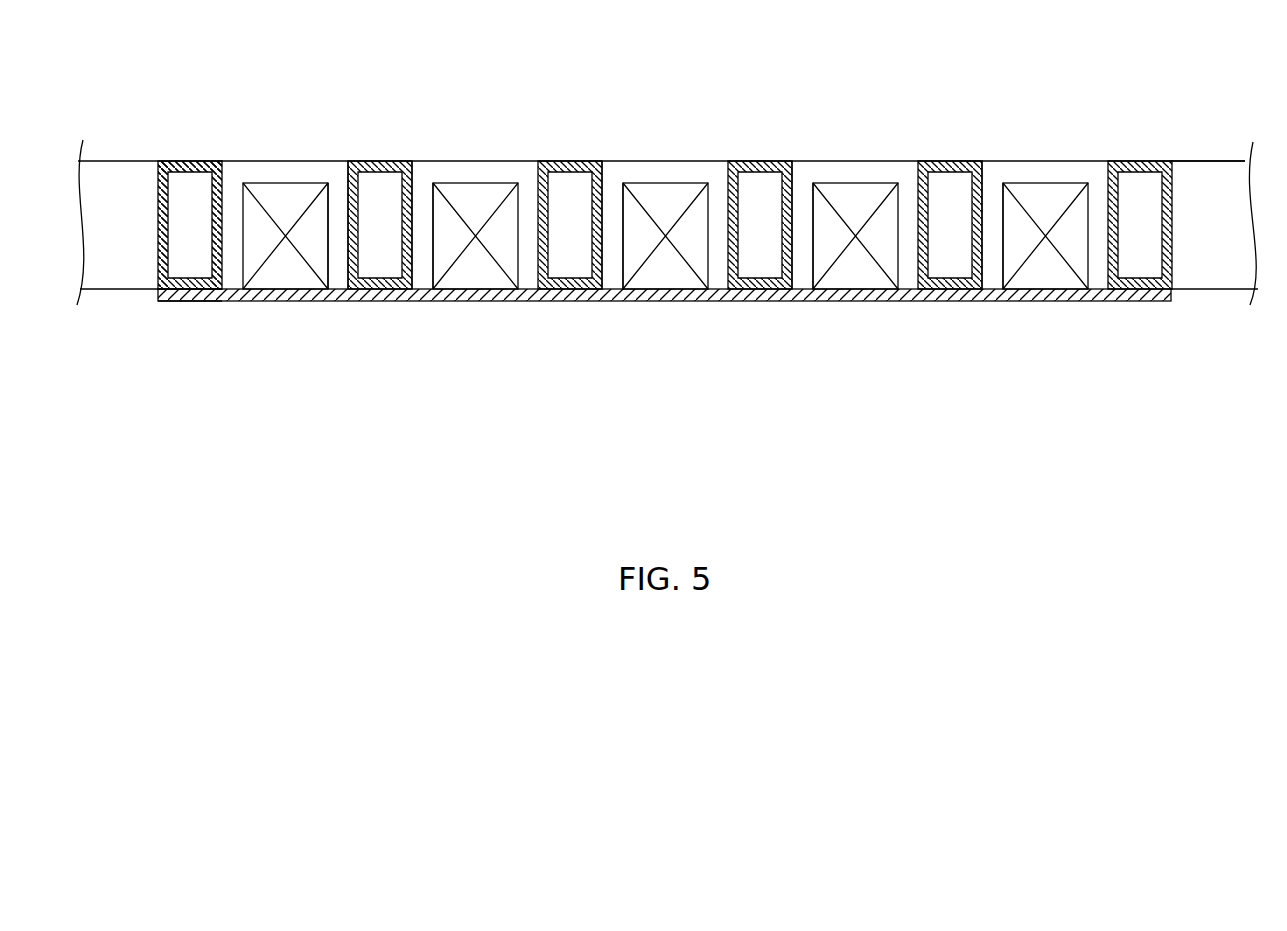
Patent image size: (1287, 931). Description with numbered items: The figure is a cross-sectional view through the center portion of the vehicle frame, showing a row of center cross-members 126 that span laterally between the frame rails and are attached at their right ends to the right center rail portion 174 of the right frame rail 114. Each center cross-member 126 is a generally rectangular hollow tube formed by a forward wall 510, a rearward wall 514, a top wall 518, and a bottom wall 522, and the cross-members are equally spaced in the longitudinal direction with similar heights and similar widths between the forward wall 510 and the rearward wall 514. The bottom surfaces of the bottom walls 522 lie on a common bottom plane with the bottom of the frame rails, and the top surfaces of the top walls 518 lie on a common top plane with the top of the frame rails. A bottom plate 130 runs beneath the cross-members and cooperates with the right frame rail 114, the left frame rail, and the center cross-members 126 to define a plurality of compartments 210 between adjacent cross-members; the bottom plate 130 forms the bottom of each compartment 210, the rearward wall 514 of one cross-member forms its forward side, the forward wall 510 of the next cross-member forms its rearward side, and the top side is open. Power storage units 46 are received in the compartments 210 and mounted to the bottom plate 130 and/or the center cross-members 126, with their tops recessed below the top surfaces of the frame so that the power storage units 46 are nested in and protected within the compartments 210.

The power storage unit 46 is at (287, 273).
The right frame rail 114 is at (1214, 172).
The center cross-member 126 is at (639, 221).
The bottom plate 130 is at (550, 302).
The right center rail portion 174 is at (443, 162).
The compartment 210 is at (337, 215).
The forward wall 510 is at (155, 172).
The rearward wall 514 is at (218, 263).
The top wall 518 is at (177, 163).
The bottom wall 522 is at (182, 300).